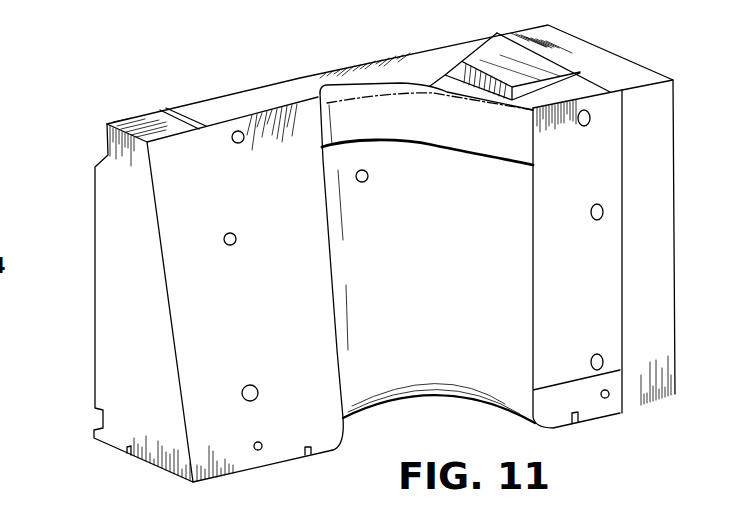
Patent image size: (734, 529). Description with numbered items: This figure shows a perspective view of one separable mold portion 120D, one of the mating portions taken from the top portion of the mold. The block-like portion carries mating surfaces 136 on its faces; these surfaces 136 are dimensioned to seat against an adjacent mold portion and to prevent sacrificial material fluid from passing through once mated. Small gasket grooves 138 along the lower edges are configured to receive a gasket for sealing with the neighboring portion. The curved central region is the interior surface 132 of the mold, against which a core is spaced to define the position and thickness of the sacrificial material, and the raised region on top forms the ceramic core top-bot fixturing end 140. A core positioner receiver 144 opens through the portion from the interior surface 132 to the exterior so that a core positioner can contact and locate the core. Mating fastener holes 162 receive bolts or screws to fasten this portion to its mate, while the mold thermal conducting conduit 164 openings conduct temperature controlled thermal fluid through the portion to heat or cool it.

The separable mold portion 120D is at (287, 135).
The interior surface 132 is at (442, 372).
The mating surface 136 is at (229, 349).
The gasket groove 138 is at (308, 456).
The ceramic core top-bot fixturing end 140 is at (425, 120).
The core positioner receiver 144 is at (362, 170).
The mating fastener hole 162 is at (224, 240).
The mold thermal conducting conduit 164 is at (238, 131).